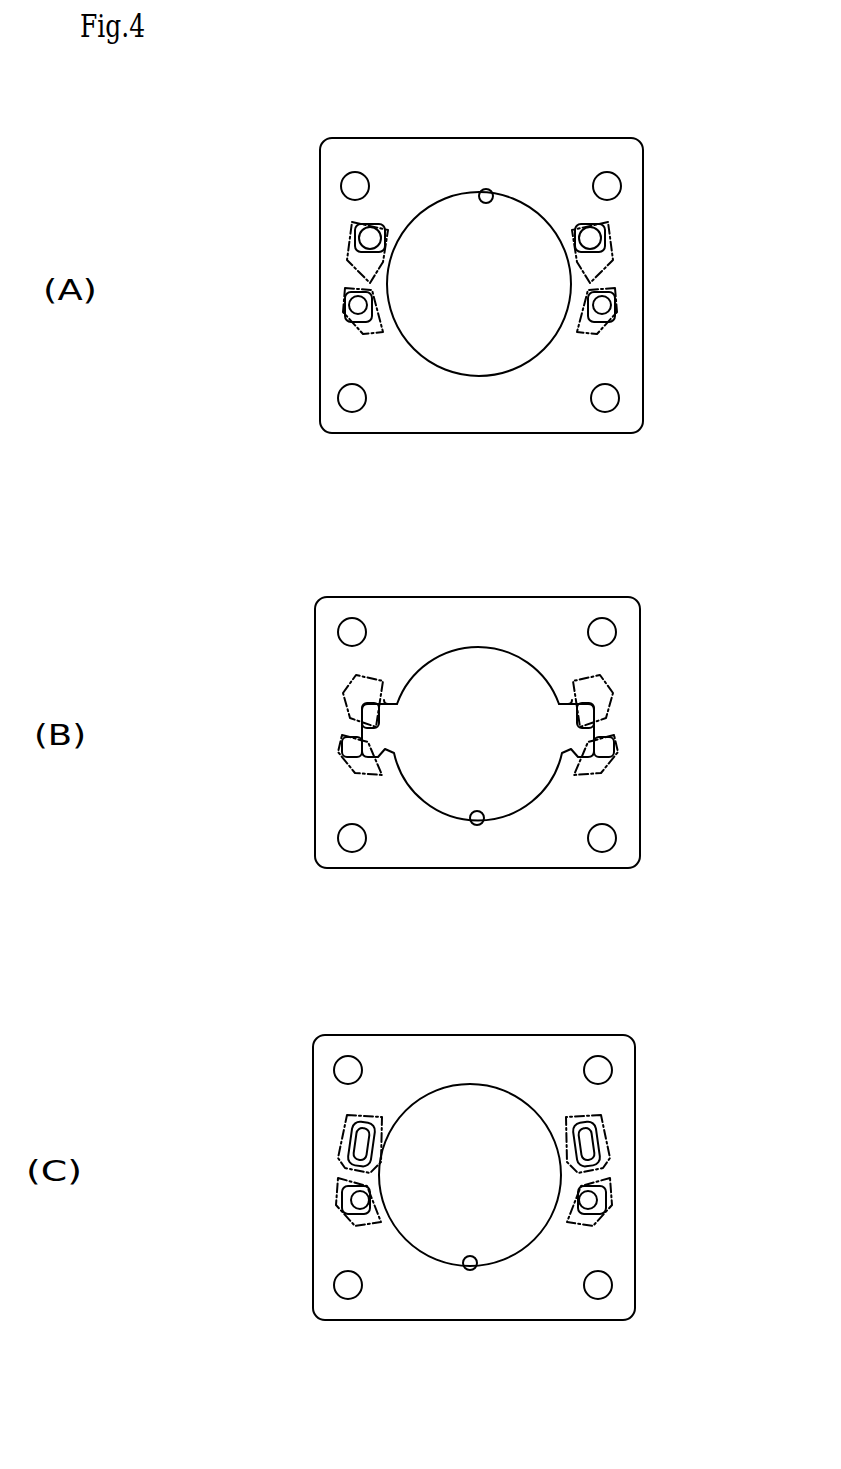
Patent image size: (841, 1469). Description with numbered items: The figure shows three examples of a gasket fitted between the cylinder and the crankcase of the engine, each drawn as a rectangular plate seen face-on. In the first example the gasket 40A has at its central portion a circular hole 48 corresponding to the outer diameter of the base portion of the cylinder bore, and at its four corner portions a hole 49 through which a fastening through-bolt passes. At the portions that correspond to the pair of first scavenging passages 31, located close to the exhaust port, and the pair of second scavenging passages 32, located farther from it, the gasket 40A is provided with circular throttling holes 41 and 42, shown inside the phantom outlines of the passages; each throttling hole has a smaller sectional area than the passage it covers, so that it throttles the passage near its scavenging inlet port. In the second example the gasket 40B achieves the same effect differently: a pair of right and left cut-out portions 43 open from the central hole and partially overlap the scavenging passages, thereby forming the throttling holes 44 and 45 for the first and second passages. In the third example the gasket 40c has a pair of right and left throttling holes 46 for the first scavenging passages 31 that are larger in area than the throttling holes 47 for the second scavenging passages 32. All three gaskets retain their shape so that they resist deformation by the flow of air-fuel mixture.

The first scavenging passages 31 is at (342, 262).
The second scavenging passages 32 is at (347, 341).
The gasket 40A is at (318, 211).
The gasket 40B is at (311, 736).
The gasket 40c is at (310, 1180).
The throttling hole 41 is at (362, 240).
The throttling hole 42 is at (352, 306).
The cut-out portion 43 is at (388, 703).
The throttling hole 44 is at (368, 717).
The throttling hole 45 is at (348, 757).
The throttling hole 46 is at (360, 1134).
The throttling hole 47 is at (355, 1201).
The circular hole 48 is at (485, 193).
The hole 49 is at (345, 183).